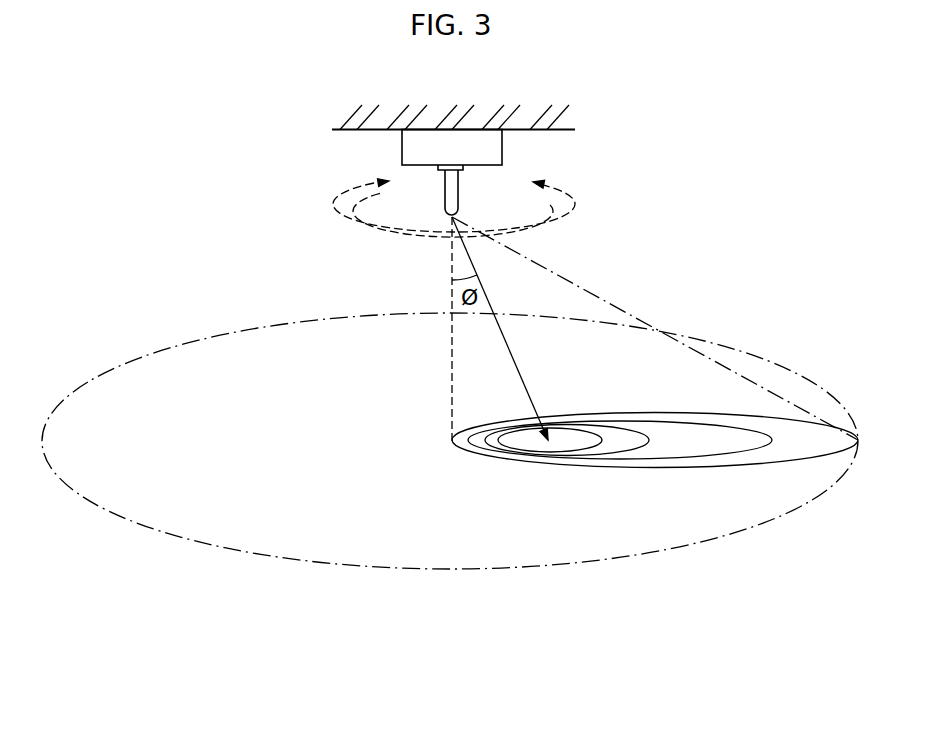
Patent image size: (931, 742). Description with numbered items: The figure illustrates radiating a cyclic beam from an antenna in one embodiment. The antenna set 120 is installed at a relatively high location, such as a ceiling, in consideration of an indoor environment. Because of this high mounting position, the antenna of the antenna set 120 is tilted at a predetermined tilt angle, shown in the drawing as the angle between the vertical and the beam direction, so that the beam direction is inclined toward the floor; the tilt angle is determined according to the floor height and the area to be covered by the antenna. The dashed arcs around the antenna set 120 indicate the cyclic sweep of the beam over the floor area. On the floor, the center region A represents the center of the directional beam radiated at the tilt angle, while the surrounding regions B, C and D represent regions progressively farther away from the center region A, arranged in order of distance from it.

The antenna set 120 is at (448, 143).
The center region of the directional beam A is at (550, 442).
The region away from the center region B is at (567, 441).
The region away from the center region C is at (620, 440).
The region away from the center region D is at (655, 440).